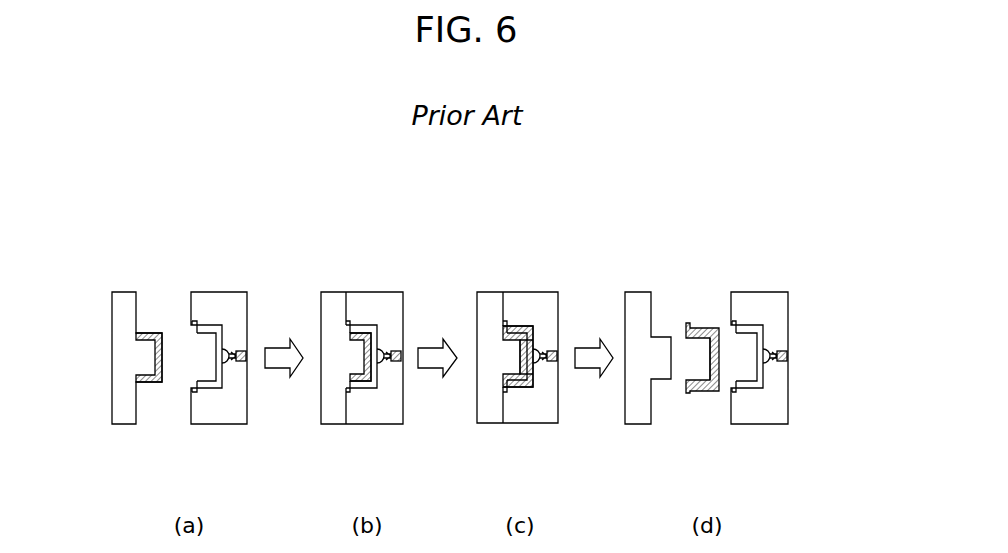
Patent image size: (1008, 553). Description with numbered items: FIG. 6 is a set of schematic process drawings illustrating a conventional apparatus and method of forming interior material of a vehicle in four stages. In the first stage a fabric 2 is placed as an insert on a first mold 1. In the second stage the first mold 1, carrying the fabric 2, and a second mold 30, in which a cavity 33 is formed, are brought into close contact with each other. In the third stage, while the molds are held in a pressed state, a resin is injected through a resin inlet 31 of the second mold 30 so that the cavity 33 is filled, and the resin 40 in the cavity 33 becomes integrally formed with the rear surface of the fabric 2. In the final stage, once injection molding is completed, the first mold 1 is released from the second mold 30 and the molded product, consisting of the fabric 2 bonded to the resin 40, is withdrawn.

The first mold 1 is at (132, 262).
The fabric 2 is at (147, 333).
The second mold 30 is at (218, 262).
The resin inlet 31 is at (243, 358).
The cavity 33 is at (222, 357).
The resin 40 is at (533, 340).